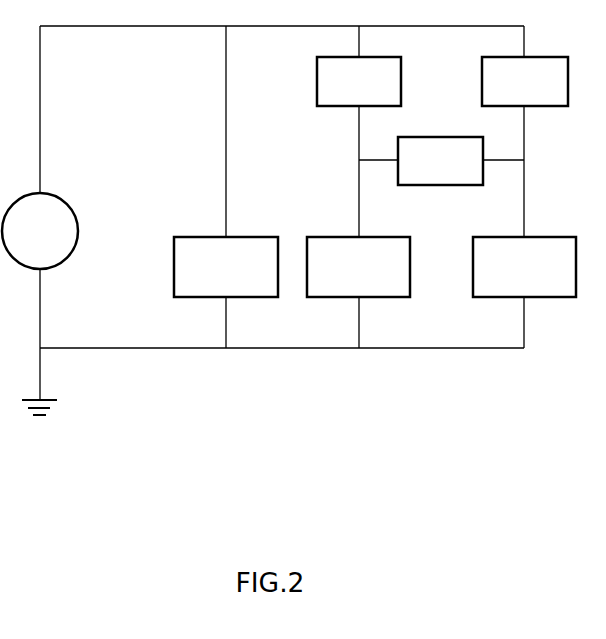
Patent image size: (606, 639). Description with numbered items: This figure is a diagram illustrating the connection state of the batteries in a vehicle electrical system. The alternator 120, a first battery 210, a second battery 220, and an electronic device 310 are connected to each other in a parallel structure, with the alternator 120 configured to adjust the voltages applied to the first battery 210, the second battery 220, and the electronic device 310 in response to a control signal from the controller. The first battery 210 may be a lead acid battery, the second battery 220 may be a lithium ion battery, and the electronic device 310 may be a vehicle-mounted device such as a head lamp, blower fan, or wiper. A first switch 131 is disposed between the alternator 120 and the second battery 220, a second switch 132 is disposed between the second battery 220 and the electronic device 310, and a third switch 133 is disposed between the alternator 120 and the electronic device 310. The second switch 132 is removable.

The alternator 120 is at (40, 231).
The first switch 131 is at (359, 81).
The second switch 132 is at (440, 161).
The third switch 133 is at (525, 81).
The first battery 210 is at (226, 267).
The second battery 220 is at (358, 267).
The electronic device 310 is at (524, 267).